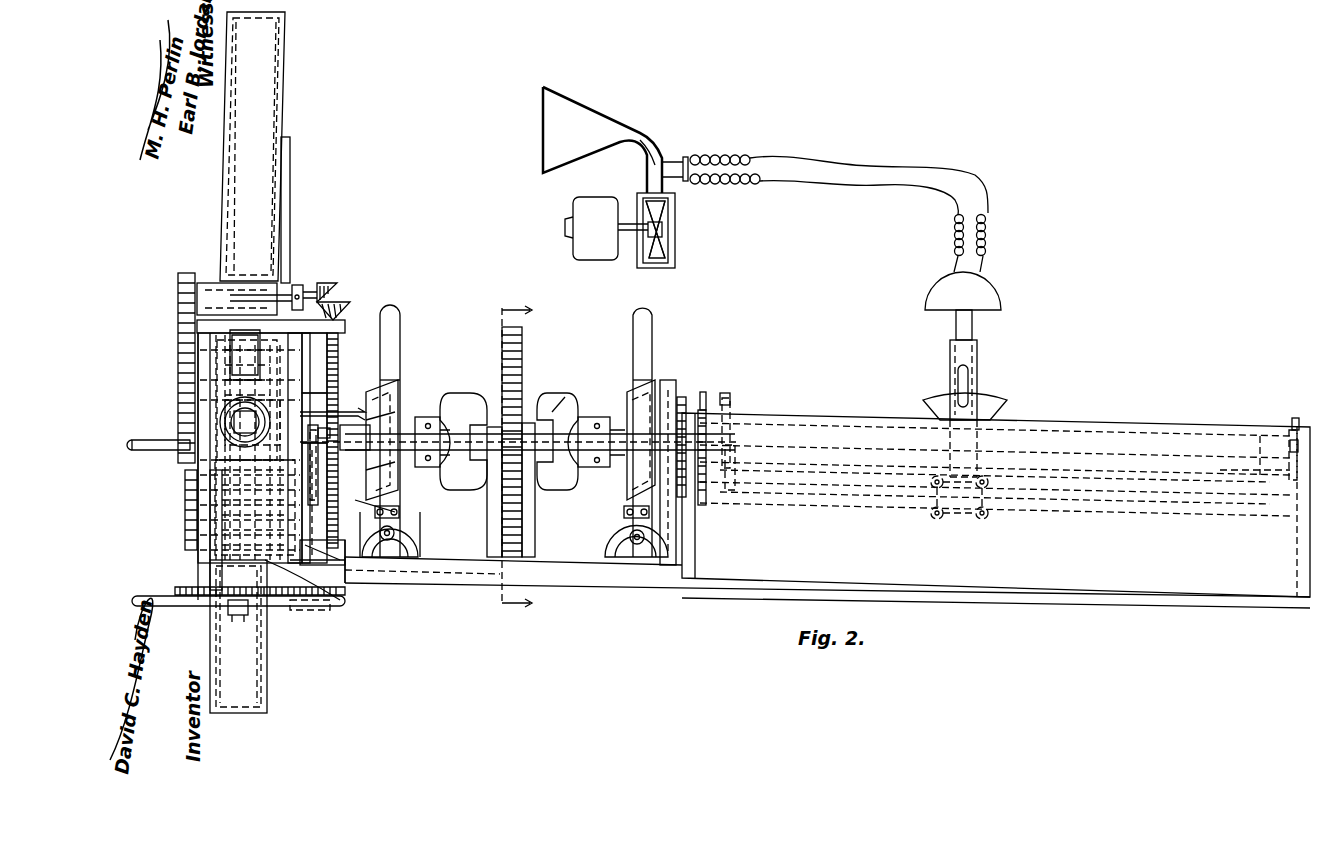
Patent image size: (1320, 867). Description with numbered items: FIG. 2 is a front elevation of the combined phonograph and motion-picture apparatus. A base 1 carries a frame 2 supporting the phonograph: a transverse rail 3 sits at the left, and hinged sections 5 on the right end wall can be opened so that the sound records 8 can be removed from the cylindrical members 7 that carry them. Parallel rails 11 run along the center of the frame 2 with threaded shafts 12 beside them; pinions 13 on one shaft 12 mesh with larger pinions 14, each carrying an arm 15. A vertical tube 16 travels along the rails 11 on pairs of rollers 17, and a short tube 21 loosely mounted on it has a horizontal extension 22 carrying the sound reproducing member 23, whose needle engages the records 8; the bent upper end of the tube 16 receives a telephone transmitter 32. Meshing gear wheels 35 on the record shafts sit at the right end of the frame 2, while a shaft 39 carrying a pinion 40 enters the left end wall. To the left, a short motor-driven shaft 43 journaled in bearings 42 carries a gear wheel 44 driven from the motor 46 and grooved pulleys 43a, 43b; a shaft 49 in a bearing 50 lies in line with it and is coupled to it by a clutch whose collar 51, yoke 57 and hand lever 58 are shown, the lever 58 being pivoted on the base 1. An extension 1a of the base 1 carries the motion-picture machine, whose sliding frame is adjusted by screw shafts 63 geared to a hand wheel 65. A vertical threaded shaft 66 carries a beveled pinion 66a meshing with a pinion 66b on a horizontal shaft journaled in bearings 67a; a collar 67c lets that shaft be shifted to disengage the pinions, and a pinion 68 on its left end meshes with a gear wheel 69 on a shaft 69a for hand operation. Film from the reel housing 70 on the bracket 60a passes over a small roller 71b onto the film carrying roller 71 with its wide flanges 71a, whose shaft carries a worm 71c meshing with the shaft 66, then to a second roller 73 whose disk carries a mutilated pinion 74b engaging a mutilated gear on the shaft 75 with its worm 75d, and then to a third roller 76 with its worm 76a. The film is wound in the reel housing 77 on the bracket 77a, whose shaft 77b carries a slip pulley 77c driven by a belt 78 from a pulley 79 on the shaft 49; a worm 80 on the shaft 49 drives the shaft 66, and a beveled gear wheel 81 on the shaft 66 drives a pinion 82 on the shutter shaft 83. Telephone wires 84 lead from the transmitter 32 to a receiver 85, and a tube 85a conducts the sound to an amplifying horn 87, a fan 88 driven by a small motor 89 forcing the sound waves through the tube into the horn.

The base 1 is at (630, 598).
The extension 1a is at (422, 572).
The frame 2 is at (996, 505).
The transverse rail 3 is at (706, 412).
The hinged or removable sections 5 is at (527, 458).
The cylindrical members 7 is at (735, 478).
The sound records 8 is at (1215, 497).
The rails 11 is at (815, 505).
The threaded shafts 12 is at (885, 463).
The pinions 13 is at (706, 400).
The larger pinions 14 is at (728, 422).
The arm 15 is at (730, 420).
The tube 16 is at (973, 325).
The rollers 17 is at (960, 520).
The short tube 21 is at (950, 352).
The tubular extension 22 is at (968, 380).
The sound reproducing member 23 is at (925, 400).
The telephone transmitter 32 is at (930, 302).
The gear wheels 35 is at (686, 400).
The shaft 39 is at (652, 380).
The pinion 40 is at (676, 400).
The bearings 42 is at (490, 527).
The short shaft 43 is at (560, 480).
The grooved pulley 43a is at (475, 410).
The grooved pulley 43b is at (570, 398).
The gear wheel 44 is at (502, 333).
The motor 46 is at (590, 417).
The shaft 49 is at (440, 440).
The bearing 50 is at (380, 392).
The collar 51 is at (442, 442).
The yoke 57 is at (395, 407).
The hand lever 58 is at (395, 305).
The bracket 60a is at (290, 150).
The screw shafts 63 is at (190, 556).
The hand wheel 65 is at (238, 611).
The threaded shaft 66 is at (315, 363).
The beveled pinion 66a is at (345, 305).
The pinion 66b is at (337, 286).
The bearings 67a is at (260, 300).
The collar 67c is at (300, 285).
The pinion 68 is at (178, 285).
The gear wheel 69 is at (195, 395).
The shaft 69a is at (140, 452).
The reel housing 70 is at (285, 70).
The film carrying roller 71 is at (200, 370).
The flanges 71a is at (220, 350).
The small roller 71b is at (245, 293).
The worm 71c is at (327, 355).
The second film supporting roller 73 is at (215, 480).
The mutilated pinion 74b is at (230, 508).
The shaft 75 is at (330, 562).
The worm 75d is at (380, 508).
The third film carrying roller 76 is at (260, 530).
The worm 76a is at (385, 557).
The reel housing 77 is at (267, 660).
The bracket 77a is at (310, 610).
The shaft 77b is at (250, 610).
The slip pulley 77c is at (340, 600).
The belt 78 is at (311, 465).
The pulley 79 is at (315, 414).
The worm 80 is at (350, 450).
The beveled gear wheel 81 is at (332, 440).
The pinion 82 is at (288, 370).
The shaft 83 is at (220, 430).
The telephone conducting wires 84 is at (838, 185).
The telephone receiver 85 is at (690, 160).
The tube 85a is at (655, 130).
The amplifying horn 87 is at (602, 140).
The fan 88 is at (660, 250).
The small motor 89 is at (580, 248).